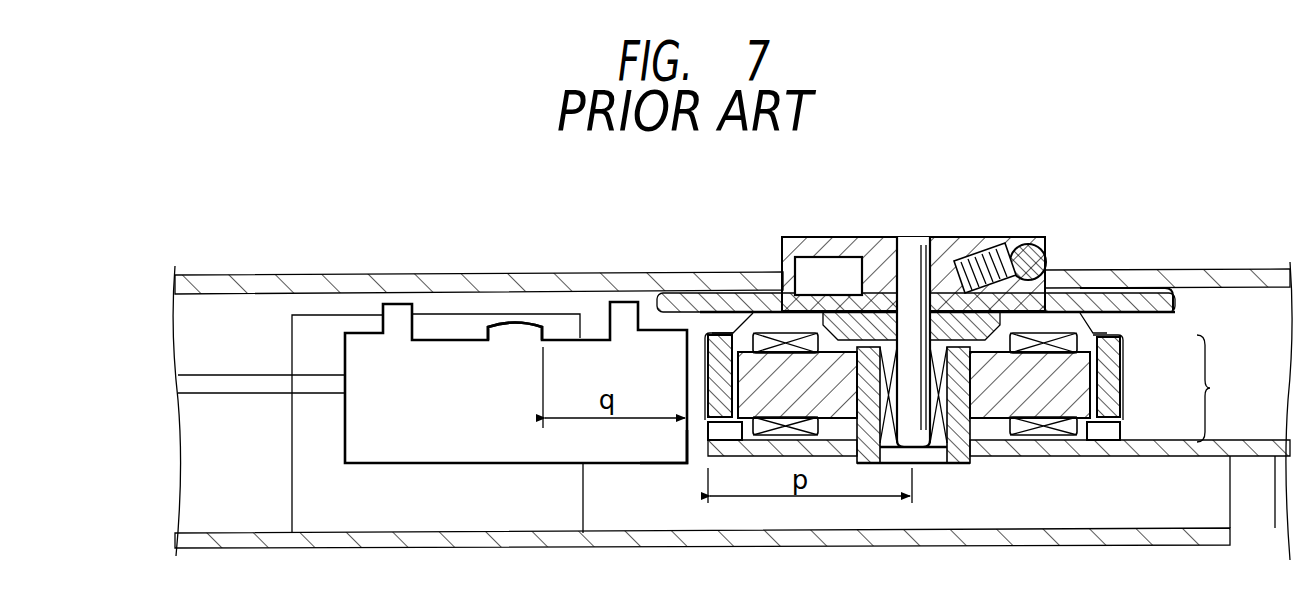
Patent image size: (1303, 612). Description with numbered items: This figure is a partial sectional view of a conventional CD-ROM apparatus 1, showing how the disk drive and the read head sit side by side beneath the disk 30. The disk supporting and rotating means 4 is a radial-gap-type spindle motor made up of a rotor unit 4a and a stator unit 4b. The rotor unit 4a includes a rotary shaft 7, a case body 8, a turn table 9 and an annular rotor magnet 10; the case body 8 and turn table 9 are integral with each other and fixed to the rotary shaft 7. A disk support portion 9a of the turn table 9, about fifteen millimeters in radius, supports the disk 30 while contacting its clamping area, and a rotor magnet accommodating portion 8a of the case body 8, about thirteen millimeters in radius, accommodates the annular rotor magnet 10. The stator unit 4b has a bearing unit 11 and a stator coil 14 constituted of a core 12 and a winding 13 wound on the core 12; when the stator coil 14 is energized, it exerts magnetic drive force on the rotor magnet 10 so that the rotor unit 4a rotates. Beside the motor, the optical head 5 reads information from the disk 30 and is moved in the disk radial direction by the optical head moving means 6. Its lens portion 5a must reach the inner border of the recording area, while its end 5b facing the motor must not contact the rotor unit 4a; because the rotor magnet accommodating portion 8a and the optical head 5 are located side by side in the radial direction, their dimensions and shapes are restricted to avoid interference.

The CD-ROM apparatus 1 is at (195, 184).
The disk 30 is at (250, 273).
The optical head 5 is at (370, 327).
The lens portion 5a is at (522, 325).
The end of the optical head 5b is at (690, 445).
The optical head moving means 6 is at (217, 370).
The rotor magnet accommodating portion 8a is at (722, 360).
The case body 8 is at (1107, 310).
The turn table 9 is at (772, 258).
The disk support portion 9a is at (1157, 314).
The rotor unit 4a is at (830, 238).
The rotary shaft 7 is at (912, 238).
The disk supporting and rotating means 4 is at (1030, 236).
The stator unit 4b is at (998, 426).
The winding 13 is at (1120, 340).
The core 12 is at (1120, 373).
The annular rotor magnet 10 is at (1120, 408).
The stator coil 14 is at (1220, 388).
The bearing unit 11 is at (938, 460).